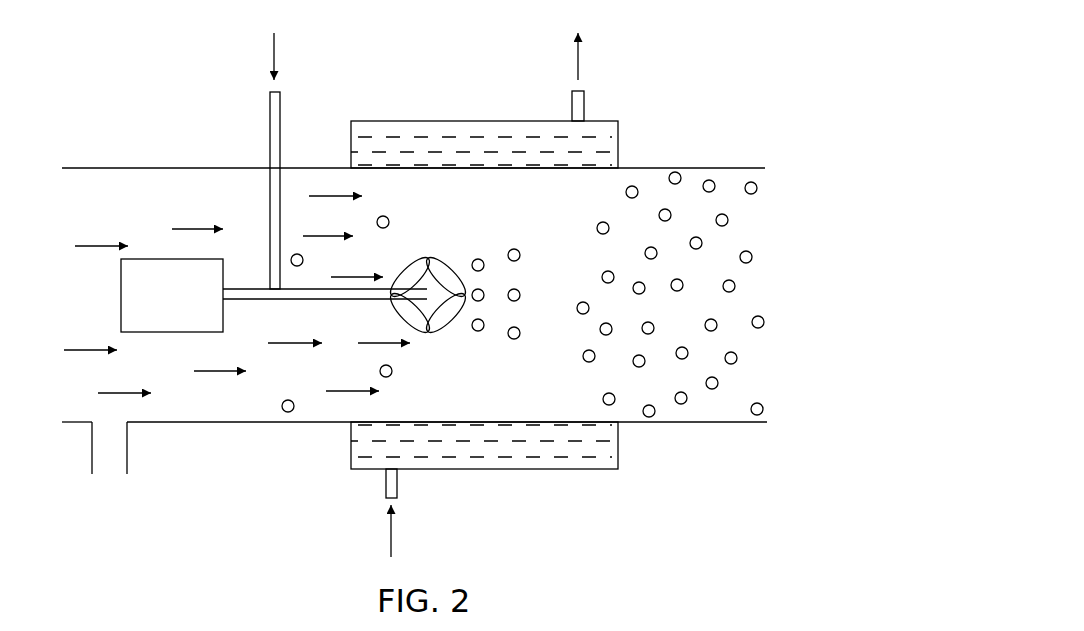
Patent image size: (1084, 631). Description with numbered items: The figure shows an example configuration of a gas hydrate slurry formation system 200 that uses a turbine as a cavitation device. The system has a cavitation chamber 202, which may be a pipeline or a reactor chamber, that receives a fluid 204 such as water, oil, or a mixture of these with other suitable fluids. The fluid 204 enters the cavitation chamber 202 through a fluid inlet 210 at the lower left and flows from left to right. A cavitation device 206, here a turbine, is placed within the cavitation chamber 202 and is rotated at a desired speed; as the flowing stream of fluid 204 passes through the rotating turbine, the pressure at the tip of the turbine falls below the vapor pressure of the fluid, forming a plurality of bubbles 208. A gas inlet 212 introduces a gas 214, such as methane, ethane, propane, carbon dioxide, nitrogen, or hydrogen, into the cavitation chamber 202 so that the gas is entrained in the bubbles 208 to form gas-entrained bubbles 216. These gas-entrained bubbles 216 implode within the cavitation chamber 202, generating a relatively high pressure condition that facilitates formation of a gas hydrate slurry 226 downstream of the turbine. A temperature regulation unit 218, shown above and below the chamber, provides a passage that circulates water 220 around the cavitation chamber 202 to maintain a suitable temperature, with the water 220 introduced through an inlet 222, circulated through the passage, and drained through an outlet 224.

The gas hydrate slurry formation system 200 is at (746, 90).
The cavitation chamber 202 is at (253, 424).
The fluid 204 is at (175, 205).
The cavitation device 206 is at (446, 262).
The plurality of bubbles 208 is at (383, 215).
The fluid inlet 210 is at (106, 447).
The gas inlet 212 is at (280, 90).
The gas 214 is at (272, 42).
The gas-entrained bubbles 216 is at (482, 258).
The temperature regulation unit 218 is at (493, 469).
The water 220 is at (597, 447).
The inlet 222 is at (388, 503).
The outlet 224 is at (574, 88).
The gas hydrate slurry 226 is at (700, 182).